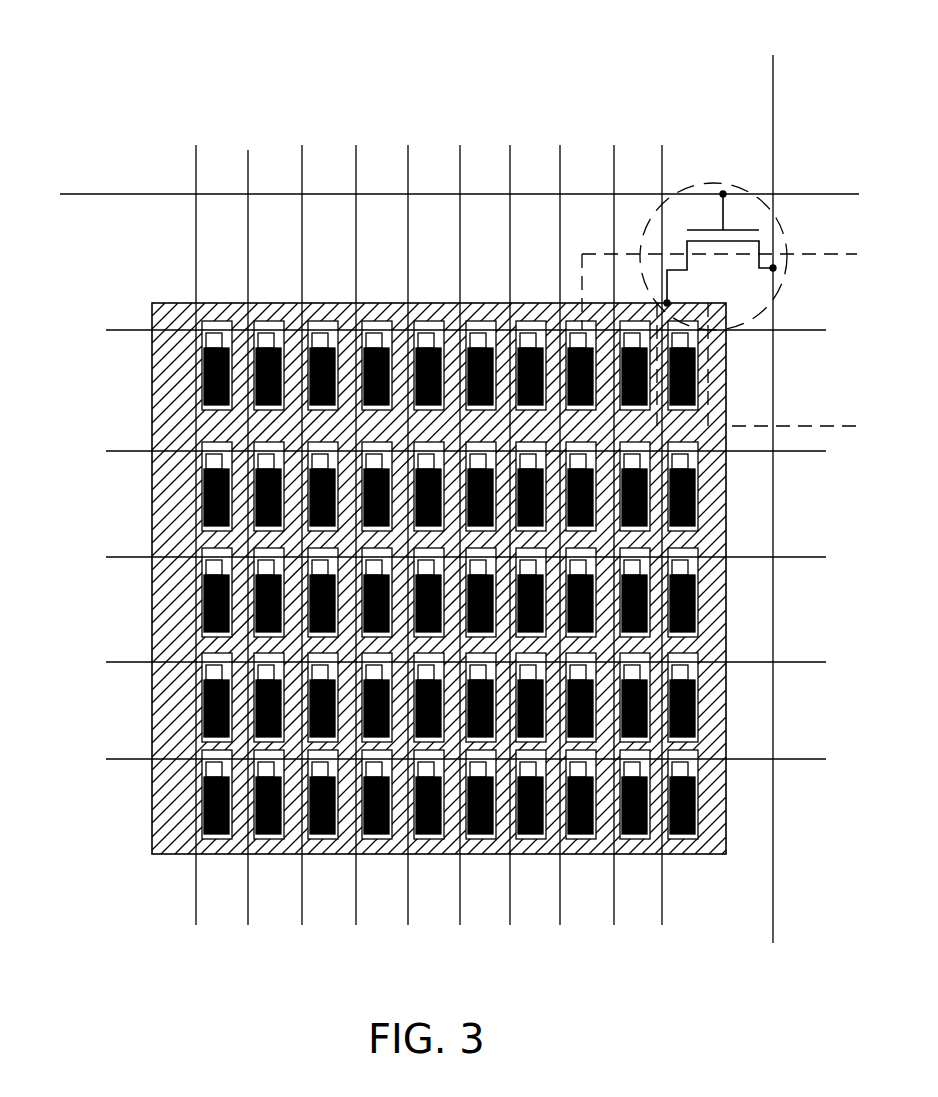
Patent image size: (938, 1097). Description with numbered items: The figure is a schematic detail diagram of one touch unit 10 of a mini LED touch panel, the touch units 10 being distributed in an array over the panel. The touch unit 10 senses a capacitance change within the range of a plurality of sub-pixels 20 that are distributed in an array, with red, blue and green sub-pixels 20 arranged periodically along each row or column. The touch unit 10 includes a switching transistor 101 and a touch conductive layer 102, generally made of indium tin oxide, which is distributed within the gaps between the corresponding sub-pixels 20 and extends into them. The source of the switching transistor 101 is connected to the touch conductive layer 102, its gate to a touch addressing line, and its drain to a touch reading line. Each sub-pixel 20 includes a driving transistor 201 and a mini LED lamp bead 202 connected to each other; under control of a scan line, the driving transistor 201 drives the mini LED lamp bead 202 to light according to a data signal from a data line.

The touch unit 10 is at (112, 109).
The sub-pixel 20 is at (712, 378).
The driving transistor 201 is at (708, 451).
The mini LED lamp bead 202 is at (700, 503).
The switching transistor 101 is at (788, 250).
The touch conductive layer 102 is at (713, 618).